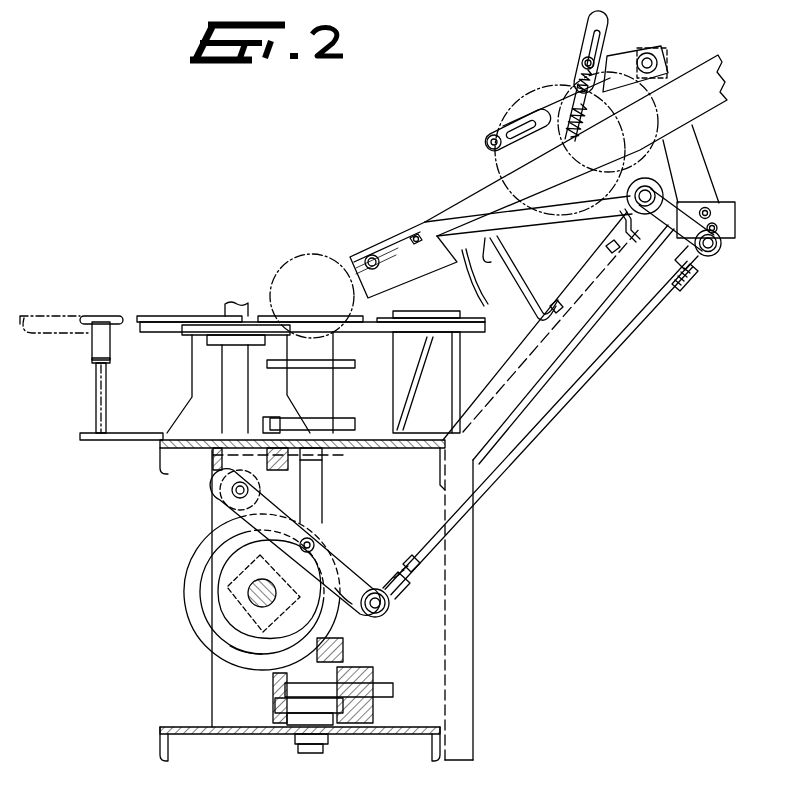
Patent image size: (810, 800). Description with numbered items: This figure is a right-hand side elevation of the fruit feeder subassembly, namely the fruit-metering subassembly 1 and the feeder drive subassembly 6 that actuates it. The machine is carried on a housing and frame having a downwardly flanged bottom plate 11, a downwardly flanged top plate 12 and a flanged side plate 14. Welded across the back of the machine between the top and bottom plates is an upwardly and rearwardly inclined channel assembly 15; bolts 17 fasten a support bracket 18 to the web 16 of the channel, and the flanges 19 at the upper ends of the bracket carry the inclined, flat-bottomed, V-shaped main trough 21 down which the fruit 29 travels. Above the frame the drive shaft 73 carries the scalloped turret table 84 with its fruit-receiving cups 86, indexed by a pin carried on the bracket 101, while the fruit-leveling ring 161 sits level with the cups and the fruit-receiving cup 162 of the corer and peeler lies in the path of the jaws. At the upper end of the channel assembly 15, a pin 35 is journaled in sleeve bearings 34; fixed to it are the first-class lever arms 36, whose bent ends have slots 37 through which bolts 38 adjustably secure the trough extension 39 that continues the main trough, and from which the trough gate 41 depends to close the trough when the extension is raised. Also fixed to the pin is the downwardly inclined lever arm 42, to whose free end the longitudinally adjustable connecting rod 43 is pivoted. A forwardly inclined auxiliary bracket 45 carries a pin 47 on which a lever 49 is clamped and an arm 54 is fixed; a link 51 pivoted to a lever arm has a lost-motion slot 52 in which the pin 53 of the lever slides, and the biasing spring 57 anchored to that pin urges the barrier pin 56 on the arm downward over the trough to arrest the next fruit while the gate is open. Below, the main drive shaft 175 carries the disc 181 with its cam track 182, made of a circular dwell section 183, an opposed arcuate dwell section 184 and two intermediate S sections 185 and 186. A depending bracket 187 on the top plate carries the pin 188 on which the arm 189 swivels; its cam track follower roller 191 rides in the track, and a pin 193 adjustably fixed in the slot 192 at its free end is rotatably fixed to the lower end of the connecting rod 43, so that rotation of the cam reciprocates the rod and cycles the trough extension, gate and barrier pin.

The fruit-metering subassembly 1 is at (569, 113).
The feeder drive subassembly 6 is at (229, 605).
The bottom plate 11 is at (264, 733).
The top plate 12 is at (374, 448).
The side plate 14 is at (377, 486).
The channel assembly 15 is at (558, 338).
The web 16 is at (578, 292).
The bolts 17 is at (606, 248).
The support bracket 18 is at (522, 258).
The flanges 19 is at (484, 252).
The main trough 21 is at (490, 190).
The fruit 29 is at (284, 258).
The sleeve bearings 34 is at (658, 182).
The pin 35 is at (620, 216).
The lever arms 36 is at (550, 218).
The slots 37 is at (386, 258).
The bolts 38 is at (370, 255).
The trough extension 39 is at (420, 272).
The trough gate 41 is at (486, 296).
The lever arm 42 is at (680, 229).
The connecting rod 43 is at (570, 392).
The auxiliary bracket 45 is at (698, 153).
The pin 47 is at (648, 54).
The lever 49 is at (618, 60).
The link 51 is at (578, 84).
The lost-motion slot 52 is at (596, 34).
The pin 53 is at (582, 66).
The arm 54 is at (562, 110).
The barrier pin 56 is at (488, 140).
The biasing spring 57 is at (588, 120).
The drive shaft 73 is at (318, 484).
The turret table 84 is at (366, 330).
The fruit-receiving cup 86 is at (190, 314).
The bracket 101 is at (448, 382).
The fruit-leveling ring 161 is at (112, 324).
The fruit-receiving cup 162 is at (56, 300).
The main drive shaft 175 is at (270, 585).
The disc 181 is at (190, 598).
The cam track 182 is at (228, 633).
The circular cam track dwell section 183 is at (250, 646).
The arcuate cam track dwell section 184 is at (348, 556).
The S section 185 is at (232, 548).
The S section 186 is at (308, 620).
The depending bracket 187 is at (262, 476).
The pin 188 is at (230, 489).
The arm 189 is at (358, 584).
The cam track follower roller 191 is at (317, 542).
The slot 192 is at (347, 604).
The pin 193 is at (376, 616).